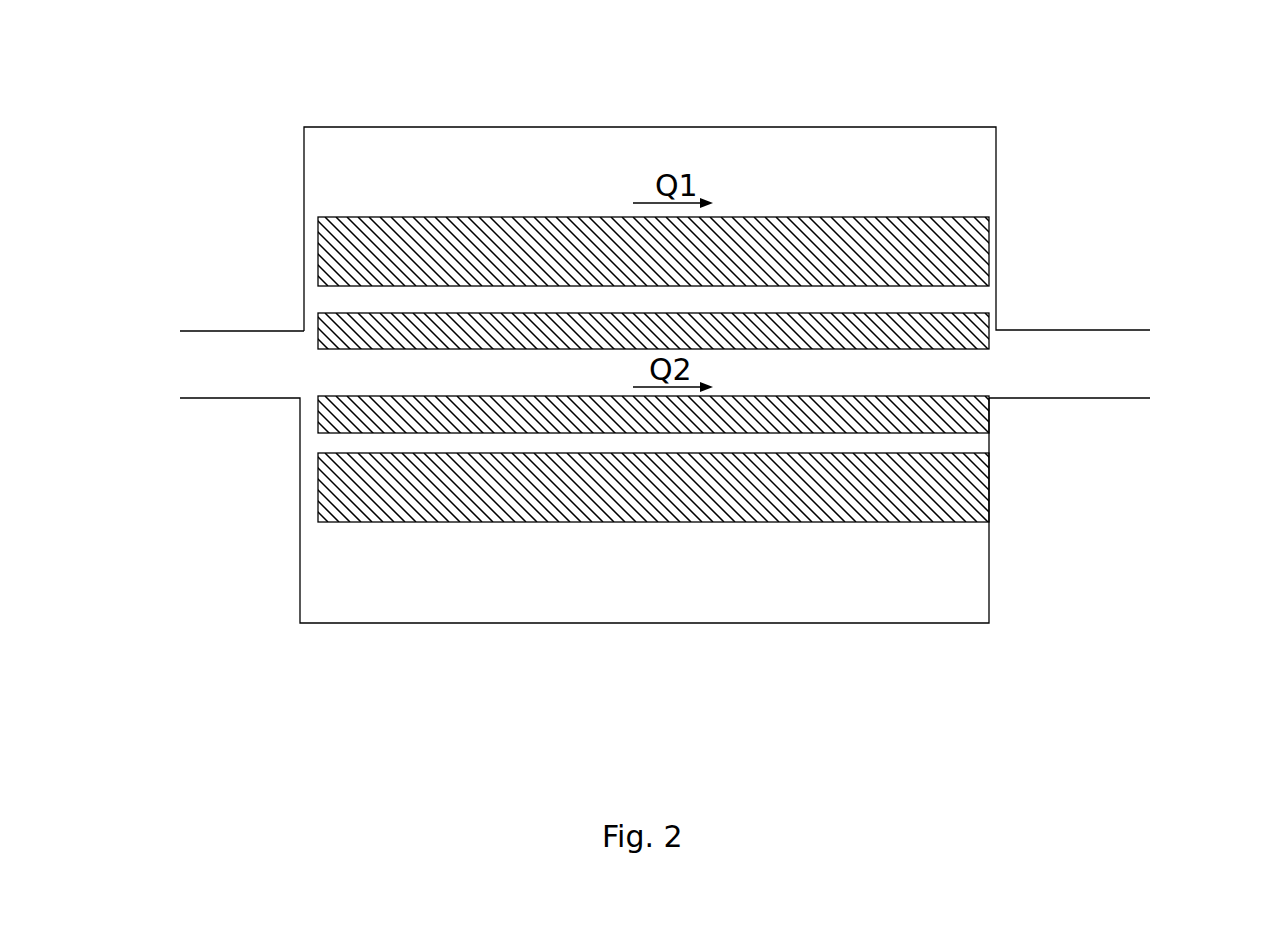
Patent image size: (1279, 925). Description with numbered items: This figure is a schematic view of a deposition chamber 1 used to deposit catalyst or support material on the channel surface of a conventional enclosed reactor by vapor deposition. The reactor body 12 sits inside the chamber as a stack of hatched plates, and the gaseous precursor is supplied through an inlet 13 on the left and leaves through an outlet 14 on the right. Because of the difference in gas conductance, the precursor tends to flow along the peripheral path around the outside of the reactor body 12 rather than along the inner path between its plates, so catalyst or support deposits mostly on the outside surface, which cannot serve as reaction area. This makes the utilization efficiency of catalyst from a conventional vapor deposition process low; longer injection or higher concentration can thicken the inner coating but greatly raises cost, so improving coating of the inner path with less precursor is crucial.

The filter device 1 is at (217, 57).
The reactor body 12 is at (318, 217).
The inlet 13 is at (215, 372).
The outlet 14 is at (1242, 364).